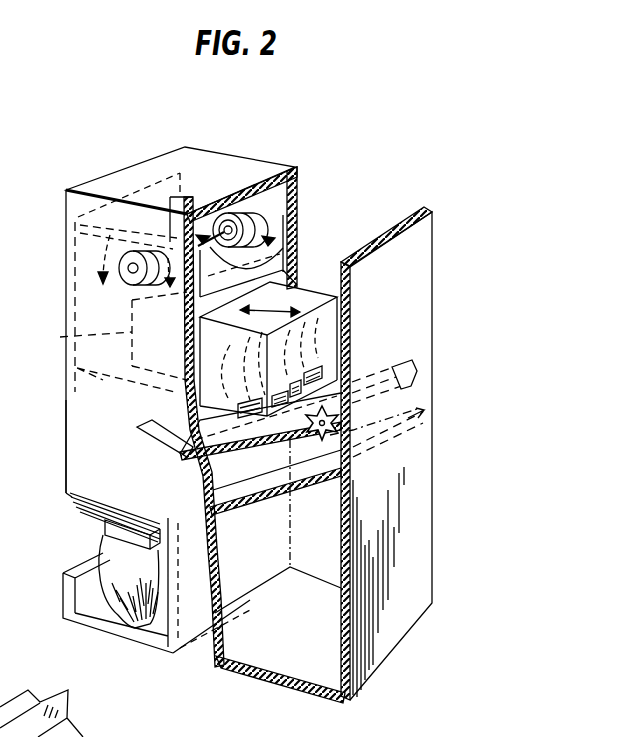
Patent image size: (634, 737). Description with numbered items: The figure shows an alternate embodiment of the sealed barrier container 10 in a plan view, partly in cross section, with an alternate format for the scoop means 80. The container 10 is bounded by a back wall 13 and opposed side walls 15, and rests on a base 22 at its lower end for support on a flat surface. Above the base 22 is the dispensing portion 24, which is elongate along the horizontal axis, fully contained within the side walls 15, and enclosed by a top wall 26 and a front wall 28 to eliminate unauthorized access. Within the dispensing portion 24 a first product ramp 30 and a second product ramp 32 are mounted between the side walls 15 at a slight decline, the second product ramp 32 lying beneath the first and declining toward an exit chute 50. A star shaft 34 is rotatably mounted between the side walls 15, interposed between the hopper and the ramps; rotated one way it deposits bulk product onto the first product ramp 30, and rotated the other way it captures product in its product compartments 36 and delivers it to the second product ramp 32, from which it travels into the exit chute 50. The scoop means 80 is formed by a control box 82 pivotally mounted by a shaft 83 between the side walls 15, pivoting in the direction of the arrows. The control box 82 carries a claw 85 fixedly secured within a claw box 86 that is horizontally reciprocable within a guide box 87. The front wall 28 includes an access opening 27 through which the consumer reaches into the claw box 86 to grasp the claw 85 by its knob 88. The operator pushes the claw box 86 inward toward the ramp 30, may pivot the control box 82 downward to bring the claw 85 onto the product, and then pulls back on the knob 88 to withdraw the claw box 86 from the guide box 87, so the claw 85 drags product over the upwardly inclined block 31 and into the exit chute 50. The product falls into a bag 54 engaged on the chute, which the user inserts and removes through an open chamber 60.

The container 10 is at (296, 140).
The back wall 13 is at (391, 290).
The opposed side walls 15 is at (297, 166).
The base 22 is at (250, 673).
The dispensing portion 24 is at (126, 157).
The top wall 26 is at (218, 160).
The access opening 27 is at (100, 200).
The front wall 28 is at (65, 406).
The first product ramp 30 is at (260, 426).
The upwardly inclined block 31 is at (158, 445).
The second product ramp 32 is at (310, 467).
The star shaft 34 is at (383, 368).
The product compartments 36 is at (2, 690).
The exit chute 50 is at (82, 503).
The bag 54 is at (138, 576).
The open chamber 60 is at (87, 588).
The scoop means 80 is at (292, 258).
The control box 82 is at (282, 248).
The shaft 83 is at (302, 262).
The claw 85 is at (182, 407).
The claw box 86 is at (303, 300).
The guide box 87 is at (70, 325).
The knob 88 is at (275, 352).